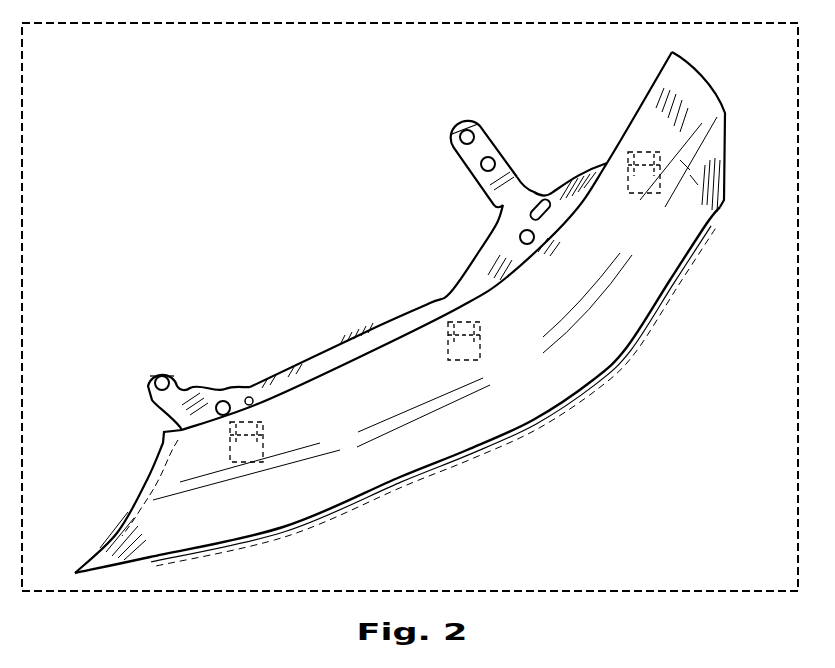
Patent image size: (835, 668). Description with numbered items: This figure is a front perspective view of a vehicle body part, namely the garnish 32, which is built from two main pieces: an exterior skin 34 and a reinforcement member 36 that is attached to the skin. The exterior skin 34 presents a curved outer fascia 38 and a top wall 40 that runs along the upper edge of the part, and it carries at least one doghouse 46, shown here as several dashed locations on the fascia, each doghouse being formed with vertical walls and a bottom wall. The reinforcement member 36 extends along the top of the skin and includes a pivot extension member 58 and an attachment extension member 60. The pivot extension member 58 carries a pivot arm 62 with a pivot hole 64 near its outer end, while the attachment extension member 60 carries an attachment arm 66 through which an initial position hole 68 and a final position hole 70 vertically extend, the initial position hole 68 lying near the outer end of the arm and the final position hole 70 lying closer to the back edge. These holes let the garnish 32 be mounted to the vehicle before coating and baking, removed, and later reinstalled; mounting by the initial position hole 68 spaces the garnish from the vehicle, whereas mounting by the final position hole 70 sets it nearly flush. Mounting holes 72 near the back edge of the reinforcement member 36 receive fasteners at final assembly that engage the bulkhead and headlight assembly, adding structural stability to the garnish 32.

The garnish 32 is at (172, 135).
The exterior skin 34 is at (683, 83).
The reinforcement member 36 is at (380, 338).
The fascia 38 is at (712, 155).
The top wall 40 is at (672, 100).
The doghouse 46 is at (253, 485).
The pivot extension member 58 is at (180, 388).
The attachment extension member 60 is at (512, 170).
The pivot arm 62 is at (168, 368).
The pivot hole 64 is at (148, 384).
The attachment arm 66 is at (483, 148).
The initial position hole 68 is at (467, 145).
The final position hole 70 is at (481, 170).
The mounting holes 72 is at (520, 237).